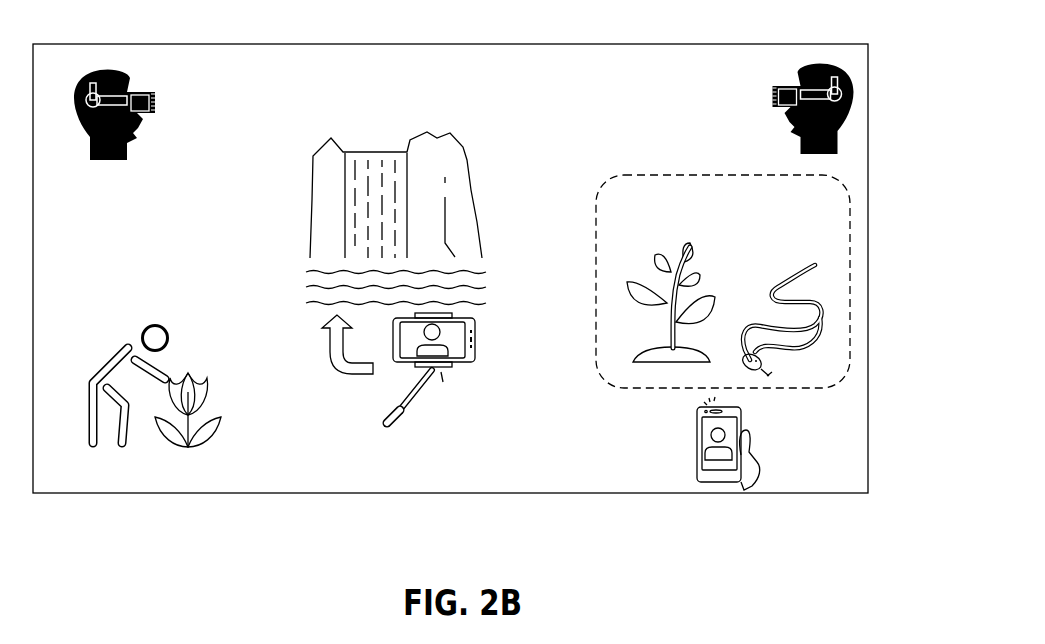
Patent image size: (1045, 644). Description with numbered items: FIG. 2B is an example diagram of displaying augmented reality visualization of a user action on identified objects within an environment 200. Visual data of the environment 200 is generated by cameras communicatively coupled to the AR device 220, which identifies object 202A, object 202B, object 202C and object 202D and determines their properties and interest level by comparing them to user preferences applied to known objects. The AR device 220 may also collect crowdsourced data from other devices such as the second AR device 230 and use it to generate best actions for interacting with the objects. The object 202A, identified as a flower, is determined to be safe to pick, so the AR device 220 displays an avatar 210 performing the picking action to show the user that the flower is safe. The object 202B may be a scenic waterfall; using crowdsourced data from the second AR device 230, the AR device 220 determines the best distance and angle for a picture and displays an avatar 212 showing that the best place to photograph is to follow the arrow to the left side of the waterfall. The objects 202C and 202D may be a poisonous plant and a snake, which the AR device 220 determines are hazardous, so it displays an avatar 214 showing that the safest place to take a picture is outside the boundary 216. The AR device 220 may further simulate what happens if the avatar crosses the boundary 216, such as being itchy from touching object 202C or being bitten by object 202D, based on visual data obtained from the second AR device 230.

The environment 200 is at (871, 182).
The object 202A is at (211, 400).
The object 202B is at (468, 175).
The object 202C is at (698, 247).
The object 202D is at (807, 263).
The avatar 210 is at (169, 334).
The avatar 212 is at (477, 346).
The avatar 214 is at (753, 456).
The boundary 216 is at (713, 172).
The AR device 220 is at (130, 77).
The second AR device 230 is at (800, 71).